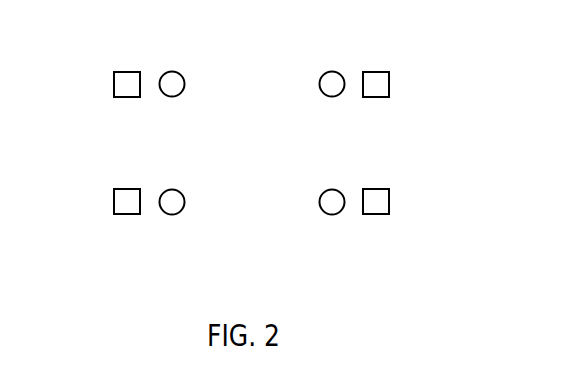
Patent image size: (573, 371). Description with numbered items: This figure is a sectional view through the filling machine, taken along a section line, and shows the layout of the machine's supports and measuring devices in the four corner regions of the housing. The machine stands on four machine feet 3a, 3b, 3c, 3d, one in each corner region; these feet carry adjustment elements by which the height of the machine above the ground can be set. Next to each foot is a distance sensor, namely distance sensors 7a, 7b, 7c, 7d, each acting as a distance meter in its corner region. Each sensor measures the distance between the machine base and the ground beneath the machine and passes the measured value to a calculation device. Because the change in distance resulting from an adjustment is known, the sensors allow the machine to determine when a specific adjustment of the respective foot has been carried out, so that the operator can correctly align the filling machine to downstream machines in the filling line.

The machine foot 3a is at (172, 215).
The machine foot 3b is at (332, 215).
The machine foot 3c is at (332, 71).
The machine foot 3d is at (172, 71).
The distance sensor 7a is at (122, 201).
The distance sensor 7b is at (380, 201).
The distance sensor 7c is at (380, 84).
The distance sensor 7d is at (122, 84).